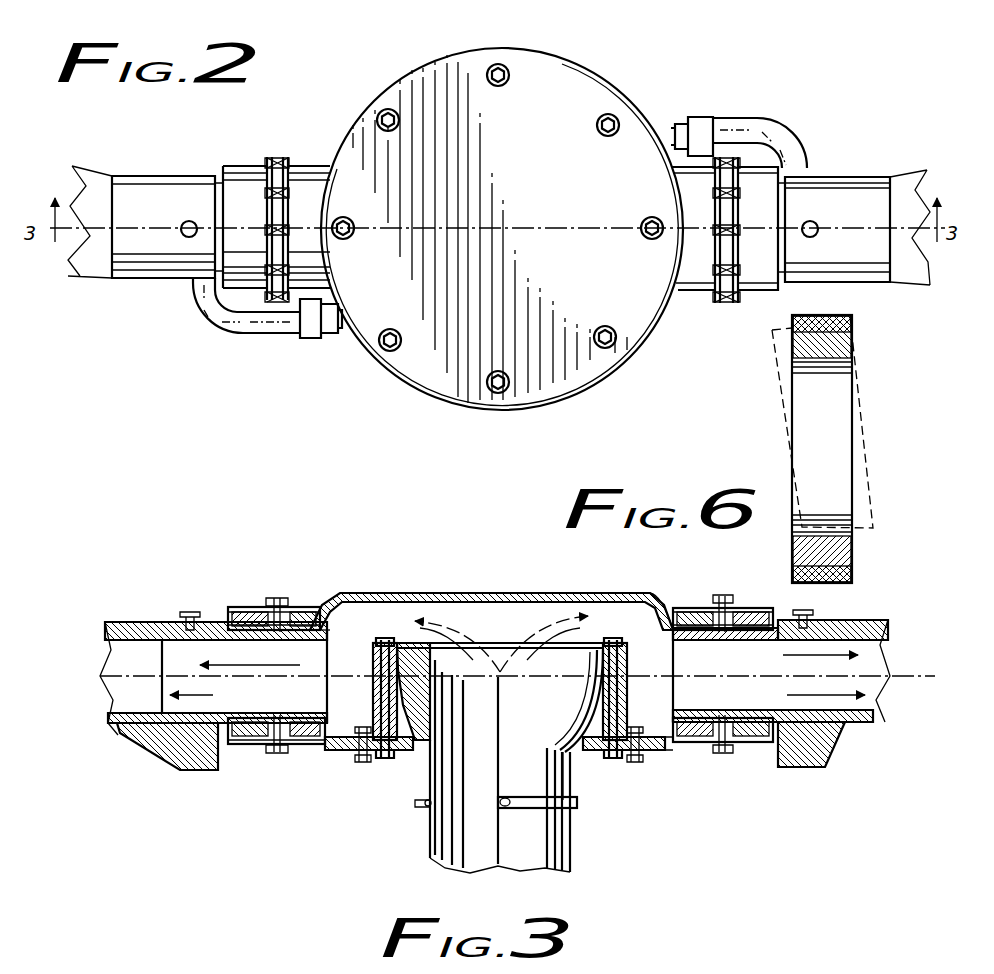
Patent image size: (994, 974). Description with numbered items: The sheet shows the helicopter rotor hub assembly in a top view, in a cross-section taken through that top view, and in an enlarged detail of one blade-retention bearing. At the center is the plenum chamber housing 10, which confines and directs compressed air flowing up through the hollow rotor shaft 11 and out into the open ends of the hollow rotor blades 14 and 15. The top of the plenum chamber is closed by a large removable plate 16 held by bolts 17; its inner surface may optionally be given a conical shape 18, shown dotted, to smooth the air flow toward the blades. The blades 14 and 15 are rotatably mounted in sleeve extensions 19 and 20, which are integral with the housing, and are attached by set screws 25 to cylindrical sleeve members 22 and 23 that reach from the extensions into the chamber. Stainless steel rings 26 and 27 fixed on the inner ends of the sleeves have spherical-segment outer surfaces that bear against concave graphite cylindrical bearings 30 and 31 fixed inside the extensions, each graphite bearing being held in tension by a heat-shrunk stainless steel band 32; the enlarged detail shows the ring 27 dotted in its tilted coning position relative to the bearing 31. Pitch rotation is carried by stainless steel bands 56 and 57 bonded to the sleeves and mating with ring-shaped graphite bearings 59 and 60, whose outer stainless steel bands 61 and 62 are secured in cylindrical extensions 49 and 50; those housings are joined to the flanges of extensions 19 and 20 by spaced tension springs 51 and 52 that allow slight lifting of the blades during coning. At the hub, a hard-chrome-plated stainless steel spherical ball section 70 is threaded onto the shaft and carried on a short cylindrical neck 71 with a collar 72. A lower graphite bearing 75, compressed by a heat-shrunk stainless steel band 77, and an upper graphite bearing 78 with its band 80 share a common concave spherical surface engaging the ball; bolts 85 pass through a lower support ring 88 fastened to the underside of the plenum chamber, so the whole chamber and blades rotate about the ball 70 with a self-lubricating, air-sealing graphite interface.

In FIG. 2, the plenum chamber housing 10 is at (600, 78).
In FIG. 3, the plenum chamber housing 10 is at (322, 600).
In FIG. 3, the hollow rotor shaft 11 is at (573, 850).
In FIG. 2, the rotor blade 14 is at (142, 177).
In FIG. 3, the rotor blade 14 is at (120, 622).
In FIG. 2, the rotor blade 15 is at (850, 177).
In FIG. 3, the rotor blade 15 is at (870, 622).
In FIG. 2, the removable plate 16 is at (552, 154).
In FIG. 3, the removable plate 16 is at (405, 594).
In FIG. 2, the bolts 17 is at (508, 67).
In FIG. 3, the conical shape 18 is at (520, 638).
In FIG. 2, the sleeve extension 19 is at (305, 166).
In FIG. 3, the sleeve extension 19 is at (302, 607).
In FIG. 2, the sleeve extension 20 is at (688, 293).
In FIG. 3, the sleeve extension 20 is at (700, 608).
In FIG. 3, the cylindrical sleeve member 22 is at (215, 712).
In FIG. 3, the cylindrical sleeve member 23 is at (725, 712).
In FIG. 2, the set screws 25 is at (189, 221).
In FIG. 3, the set screws 25 is at (204, 598).
In FIG. 3, the stainless steel ring 26 is at (317, 630).
In FIG. 6, the stainless steel ring 27 is at (800, 522).
In FIG. 3, the stainless steel ring 27 is at (668, 600).
In FIG. 3, the graphite cylindrical bearing 30 is at (300, 745).
In FIG. 6, the graphite cylindrical bearing 31 is at (852, 343).
In FIG. 3, the graphite cylindrical bearing 31 is at (697, 745).
In FIG. 6, the stainless steel band 32 is at (852, 318).
In FIG. 2, the cylindrical extension 49 is at (245, 166).
In FIG. 3, the cylindrical extension 49 is at (238, 607).
In FIG. 2, the cylindrical extension 50 is at (762, 291).
In FIG. 3, the cylindrical extension 50 is at (760, 608).
In FIG. 2, the tension springs 51 is at (277, 157).
In FIG. 3, the tension springs 51 is at (277, 752).
In FIG. 2, the tension springs 52 is at (727, 303).
In FIG. 3, the tension springs 52 is at (722, 755).
In FIG. 3, the stainless steel band 56 is at (263, 630).
In FIG. 3, the stainless steel band 57 is at (750, 640).
In FIG. 3, the graphite bearing 59 is at (240, 745).
In FIG. 3, the graphite bearing 60 is at (790, 752).
In FIG. 3, the stainless steel band 61 is at (277, 600).
In FIG. 3, the stainless steel band 62 is at (730, 608).
In FIG. 3, the spherical ball section 70 is at (425, 745).
In FIG. 3, the cylindrical neck 71 is at (572, 775).
In FIG. 3, the collar 72 is at (580, 804).
In FIG. 3, the graphite bearing 75 is at (592, 700).
In FIG. 3, the stainless steel band 77 is at (630, 700).
In FIG. 3, the graphite bearing 78 is at (600, 660).
In FIG. 3, the stainless steel band 80 is at (627, 650).
In FIG. 3, the bolts 85 is at (385, 760).
In FIG. 3, the lower support ring 88 is at (363, 762).